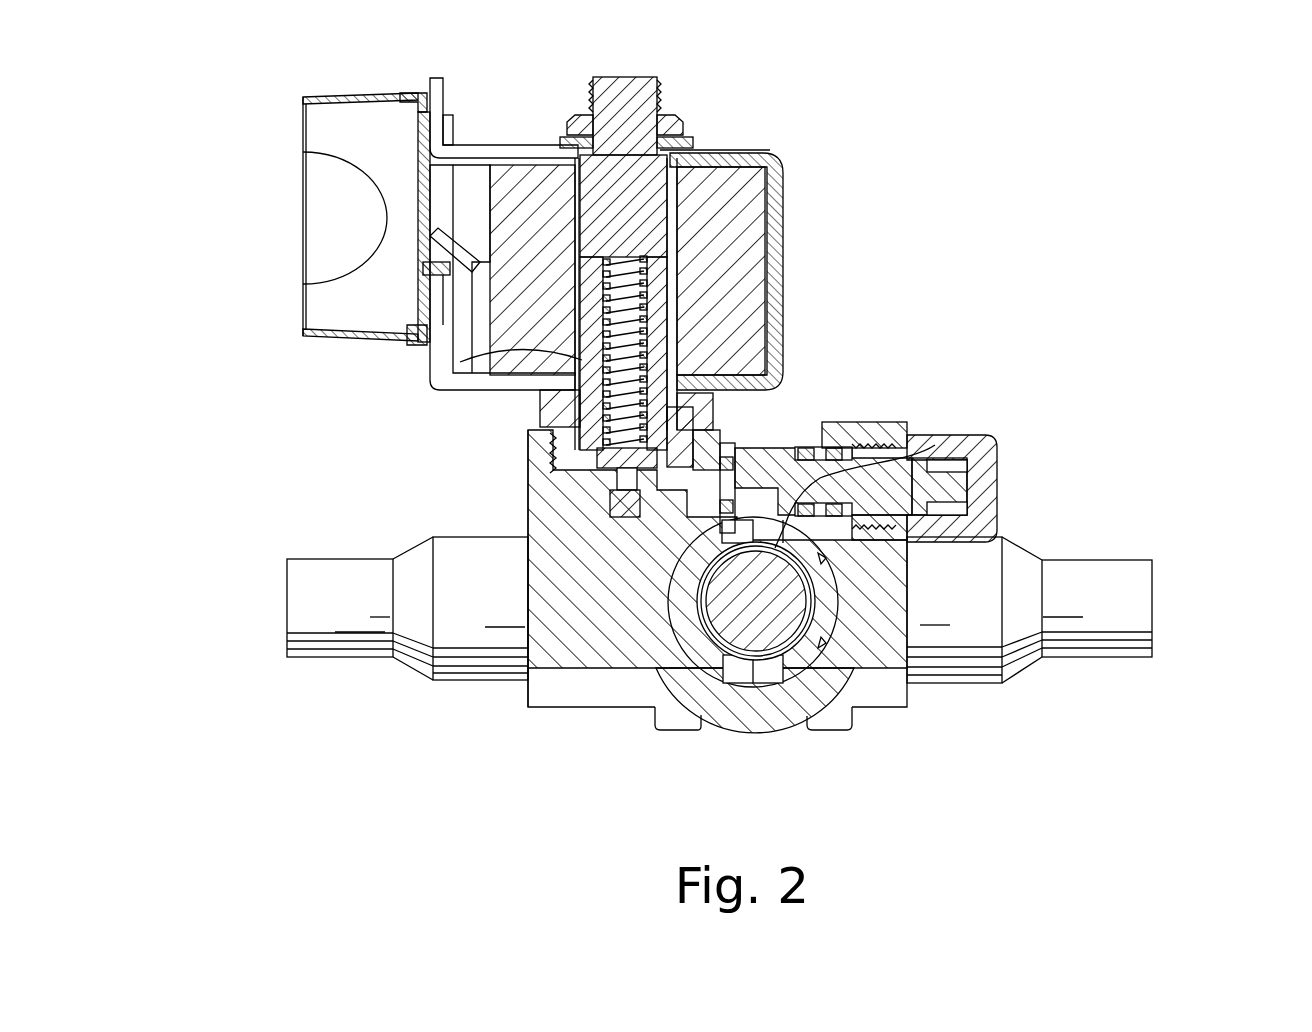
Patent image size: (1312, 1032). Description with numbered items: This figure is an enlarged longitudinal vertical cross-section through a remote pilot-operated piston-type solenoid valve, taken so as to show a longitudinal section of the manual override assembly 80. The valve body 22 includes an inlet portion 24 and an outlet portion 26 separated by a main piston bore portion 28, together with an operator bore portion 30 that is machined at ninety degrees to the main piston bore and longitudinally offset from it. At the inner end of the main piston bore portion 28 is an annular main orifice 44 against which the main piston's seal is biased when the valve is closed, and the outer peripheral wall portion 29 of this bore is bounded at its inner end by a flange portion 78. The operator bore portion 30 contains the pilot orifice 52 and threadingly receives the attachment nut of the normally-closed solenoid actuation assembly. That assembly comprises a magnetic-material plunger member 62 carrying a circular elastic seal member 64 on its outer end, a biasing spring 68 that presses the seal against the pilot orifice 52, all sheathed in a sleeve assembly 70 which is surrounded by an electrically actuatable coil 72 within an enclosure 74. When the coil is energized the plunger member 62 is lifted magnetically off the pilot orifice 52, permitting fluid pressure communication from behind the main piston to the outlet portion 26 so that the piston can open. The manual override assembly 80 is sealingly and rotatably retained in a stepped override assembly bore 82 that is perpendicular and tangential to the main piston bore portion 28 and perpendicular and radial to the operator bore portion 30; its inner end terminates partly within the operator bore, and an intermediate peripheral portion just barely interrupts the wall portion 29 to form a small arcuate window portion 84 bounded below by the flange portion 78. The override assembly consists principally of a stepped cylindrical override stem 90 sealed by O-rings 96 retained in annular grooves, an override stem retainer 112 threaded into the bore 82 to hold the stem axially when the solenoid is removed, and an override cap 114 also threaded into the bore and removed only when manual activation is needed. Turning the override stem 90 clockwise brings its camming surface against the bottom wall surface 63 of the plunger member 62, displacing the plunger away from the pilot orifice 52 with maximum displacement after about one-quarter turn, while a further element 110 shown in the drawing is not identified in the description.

The valve body 22 is at (905, 610).
The inlet portion 24 is at (1133, 638).
The outlet portion 26 is at (297, 633).
The main piston bore portion 28 is at (827, 597).
The outer peripheral wall portion 29 is at (677, 613).
The operator bore portion 30 is at (545, 605).
The annular main orifice 44 is at (752, 700).
The pilot orifice 52 is at (545, 519).
The plunger member 62 is at (440, 386).
The bottom wall surface 63 is at (622, 457).
The circular elastic seal member 64 is at (542, 418).
The biasing spring 68 is at (603, 293).
The sleeve assembly 70 is at (670, 253).
The coil 72 is at (747, 207).
The enclosure 74 is at (780, 188).
The flange portion 78 is at (787, 665).
The manual override assembly 80 is at (946, 421).
The stepped override assembly bore 82 is at (742, 440).
The arcuate window portion 84 is at (900, 440).
The override stem 90 is at (973, 435).
The sealing O-rings 96 is at (810, 423).
The body wall 110 is at (600, 565).
The override stem retainer 112 is at (940, 443).
The override cap 114 is at (998, 512).